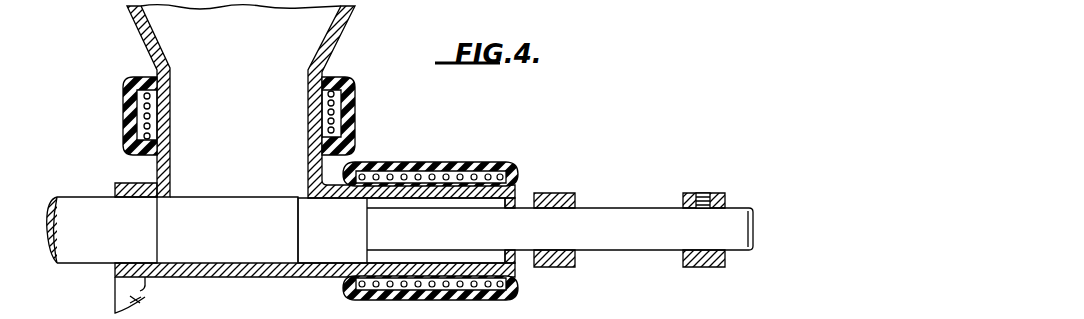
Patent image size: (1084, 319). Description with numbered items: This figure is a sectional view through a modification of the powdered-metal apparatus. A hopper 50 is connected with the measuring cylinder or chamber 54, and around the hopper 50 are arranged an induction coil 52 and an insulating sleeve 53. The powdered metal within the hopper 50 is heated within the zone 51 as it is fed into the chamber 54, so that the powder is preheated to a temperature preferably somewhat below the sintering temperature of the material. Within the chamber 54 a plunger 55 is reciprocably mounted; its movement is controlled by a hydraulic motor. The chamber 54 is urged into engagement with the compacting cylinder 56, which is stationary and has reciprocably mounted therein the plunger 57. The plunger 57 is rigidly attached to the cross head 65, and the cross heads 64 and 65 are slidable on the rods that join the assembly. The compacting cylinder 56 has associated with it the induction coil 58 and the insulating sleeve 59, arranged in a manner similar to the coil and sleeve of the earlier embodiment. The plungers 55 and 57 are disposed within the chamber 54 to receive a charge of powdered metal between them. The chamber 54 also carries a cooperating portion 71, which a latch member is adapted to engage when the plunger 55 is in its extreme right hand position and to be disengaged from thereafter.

The hopper 50 is at (148, 34).
The zone 51 is at (200, 82).
The induction coil 52 is at (343, 111).
The insulating sleeve 53 is at (140, 116).
The measuring cylinder or chamber 54 is at (241, 268).
The plunger 55 is at (108, 239).
The compacting cylinder 56 is at (423, 198).
The plunger 57 is at (333, 228).
The induction coil 58 is at (478, 176).
The insulating sleeve 59 is at (510, 178).
The cross head 64 is at (571, 193).
The cross head 65 is at (716, 193).
The cooperating portion 71 is at (145, 296).